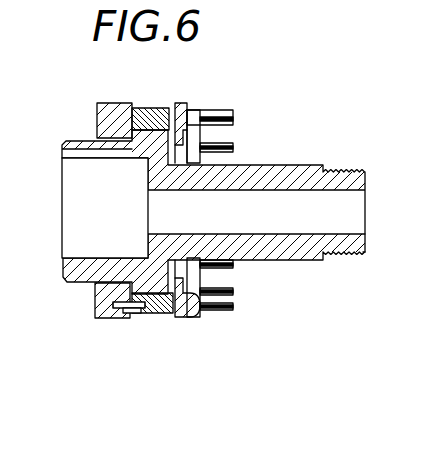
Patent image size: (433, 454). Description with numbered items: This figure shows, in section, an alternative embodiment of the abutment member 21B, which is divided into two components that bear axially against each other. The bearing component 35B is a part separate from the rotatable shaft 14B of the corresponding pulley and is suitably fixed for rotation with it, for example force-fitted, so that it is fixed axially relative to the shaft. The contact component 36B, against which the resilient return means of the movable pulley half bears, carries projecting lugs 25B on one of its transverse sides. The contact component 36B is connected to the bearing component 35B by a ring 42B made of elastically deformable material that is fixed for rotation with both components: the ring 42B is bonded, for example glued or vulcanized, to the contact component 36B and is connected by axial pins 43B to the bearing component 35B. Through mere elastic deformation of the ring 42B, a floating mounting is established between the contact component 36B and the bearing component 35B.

The rotatable shaft 14B is at (347, 168).
The bearing component 35B is at (97, 104).
The ring 42B is at (162, 108).
The contact component 36B is at (190, 104).
The projecting lugs 25B is at (233, 112).
The axial pins 43B is at (128, 310).
The abutment member 21B is at (193, 324).